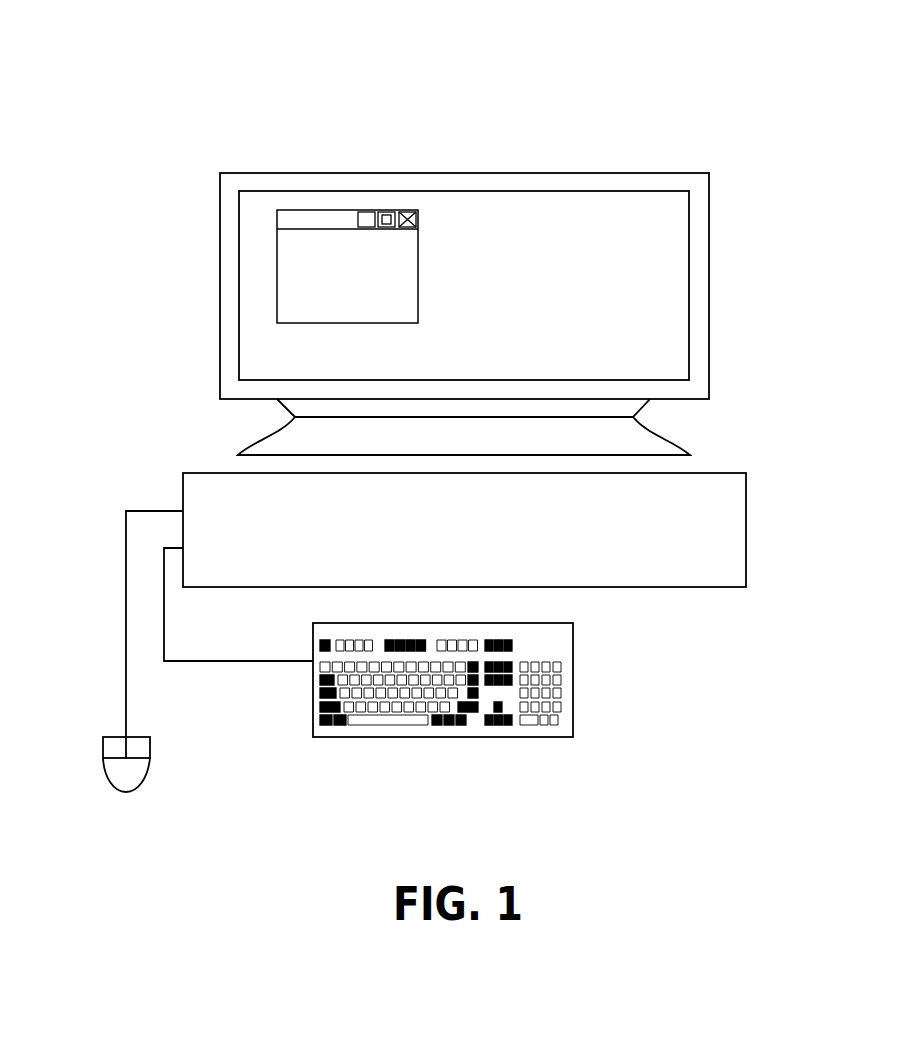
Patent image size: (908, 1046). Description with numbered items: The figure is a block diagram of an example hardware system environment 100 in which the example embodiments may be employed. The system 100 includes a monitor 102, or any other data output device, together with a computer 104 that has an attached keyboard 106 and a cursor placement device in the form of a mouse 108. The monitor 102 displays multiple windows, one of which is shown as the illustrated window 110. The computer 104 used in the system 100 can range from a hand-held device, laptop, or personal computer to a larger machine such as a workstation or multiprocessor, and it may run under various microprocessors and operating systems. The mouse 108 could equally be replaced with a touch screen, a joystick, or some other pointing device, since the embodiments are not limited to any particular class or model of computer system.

The hardware system environment 100 is at (747, 113).
The monitor 102 is at (709, 244).
The computer 104 is at (746, 529).
The keyboard 106 is at (573, 676).
The mouse 108 is at (140, 737).
The window 110 is at (418, 284).